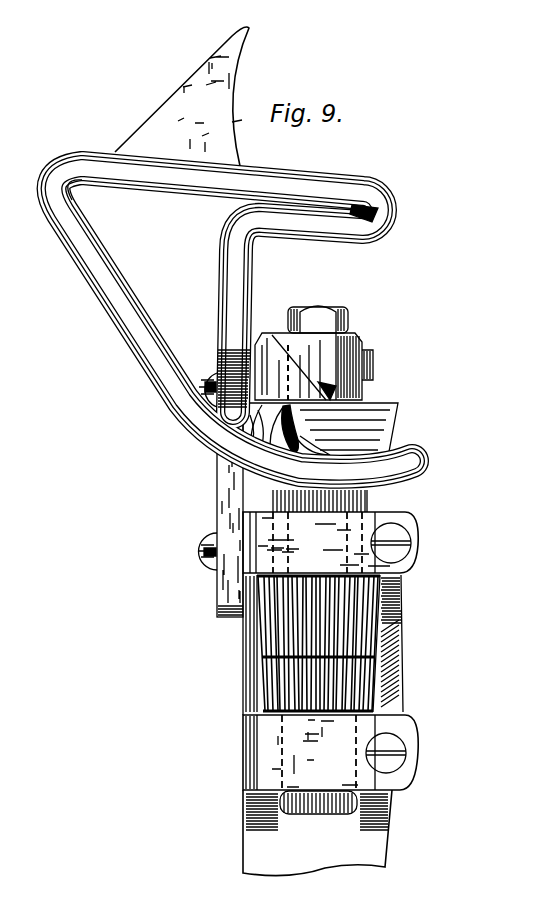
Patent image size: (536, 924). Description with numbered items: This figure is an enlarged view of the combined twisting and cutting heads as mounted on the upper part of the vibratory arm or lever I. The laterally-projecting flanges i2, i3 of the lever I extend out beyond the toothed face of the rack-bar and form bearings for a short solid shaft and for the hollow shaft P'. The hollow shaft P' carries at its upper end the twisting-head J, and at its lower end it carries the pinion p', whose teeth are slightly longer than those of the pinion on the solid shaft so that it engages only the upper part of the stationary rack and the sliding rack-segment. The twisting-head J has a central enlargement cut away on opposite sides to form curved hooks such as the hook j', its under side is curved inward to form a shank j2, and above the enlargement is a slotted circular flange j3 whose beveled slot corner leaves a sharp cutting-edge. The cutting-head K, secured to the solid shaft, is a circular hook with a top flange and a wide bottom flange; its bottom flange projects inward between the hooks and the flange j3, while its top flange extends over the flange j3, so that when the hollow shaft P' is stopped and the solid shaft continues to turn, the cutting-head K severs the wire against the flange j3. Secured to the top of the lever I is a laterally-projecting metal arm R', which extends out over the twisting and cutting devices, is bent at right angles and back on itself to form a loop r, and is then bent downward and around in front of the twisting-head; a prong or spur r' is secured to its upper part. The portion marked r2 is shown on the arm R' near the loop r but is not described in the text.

The vibratory arm or lever I is at (317, 833).
The laterally-projecting flange i2 is at (361, 738).
The laterally-projecting flange i3 is at (348, 533).
The twisting-head J is at (283, 464).
The curved hook j' is at (226, 438).
The shank j2 is at (297, 447).
The circular flange j3 is at (262, 443).
The cutting-head K is at (314, 353).
The hollow shaft P' is at (351, 530).
The pinion p' is at (405, 643).
The laterally-projecting metal arm R' is at (185, 436).
The loop r is at (233, 317).
The prong or spur r' is at (182, 96).
The loop corner r2 is at (106, 214).